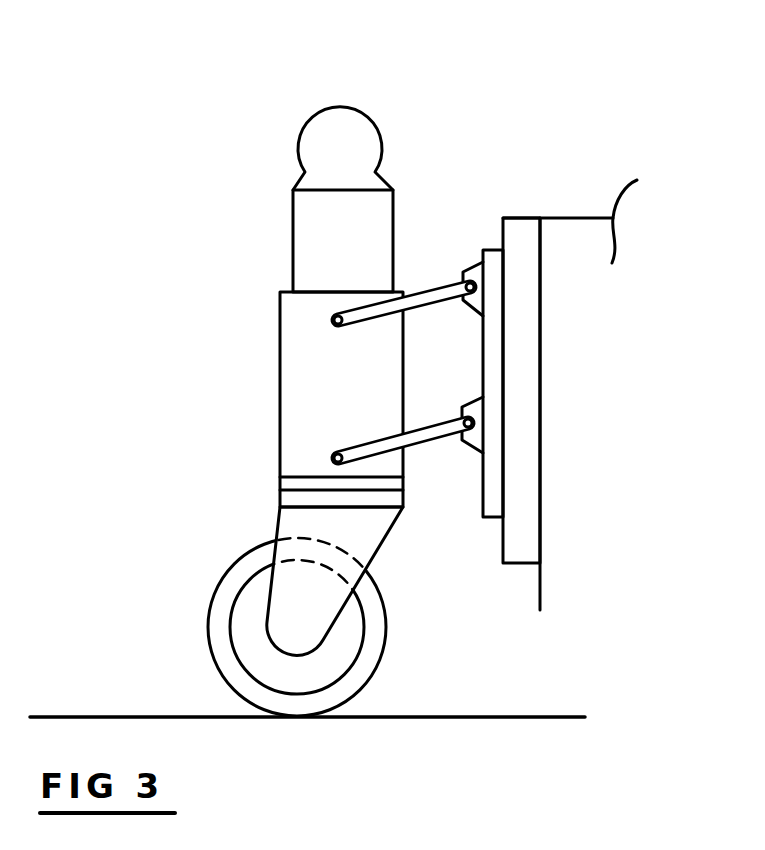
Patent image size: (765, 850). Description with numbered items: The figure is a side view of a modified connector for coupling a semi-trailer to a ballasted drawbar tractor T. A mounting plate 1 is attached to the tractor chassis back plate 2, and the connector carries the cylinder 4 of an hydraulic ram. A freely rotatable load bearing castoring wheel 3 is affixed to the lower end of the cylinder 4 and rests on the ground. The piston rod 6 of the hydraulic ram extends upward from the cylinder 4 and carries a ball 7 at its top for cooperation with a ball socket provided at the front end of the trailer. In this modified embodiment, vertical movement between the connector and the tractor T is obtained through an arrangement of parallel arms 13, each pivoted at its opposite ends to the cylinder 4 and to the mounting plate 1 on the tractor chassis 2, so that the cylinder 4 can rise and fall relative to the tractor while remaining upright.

The mounting plate 1 is at (495, 288).
The tractor chassis back plate 2 is at (520, 487).
The castoring wheel 3 is at (240, 617).
The cylinder 4 is at (312, 403).
The piston rod 6 is at (343, 252).
The ball 7 is at (330, 145).
The parallel arms 13 is at (420, 298).
The tractor T is at (583, 332).